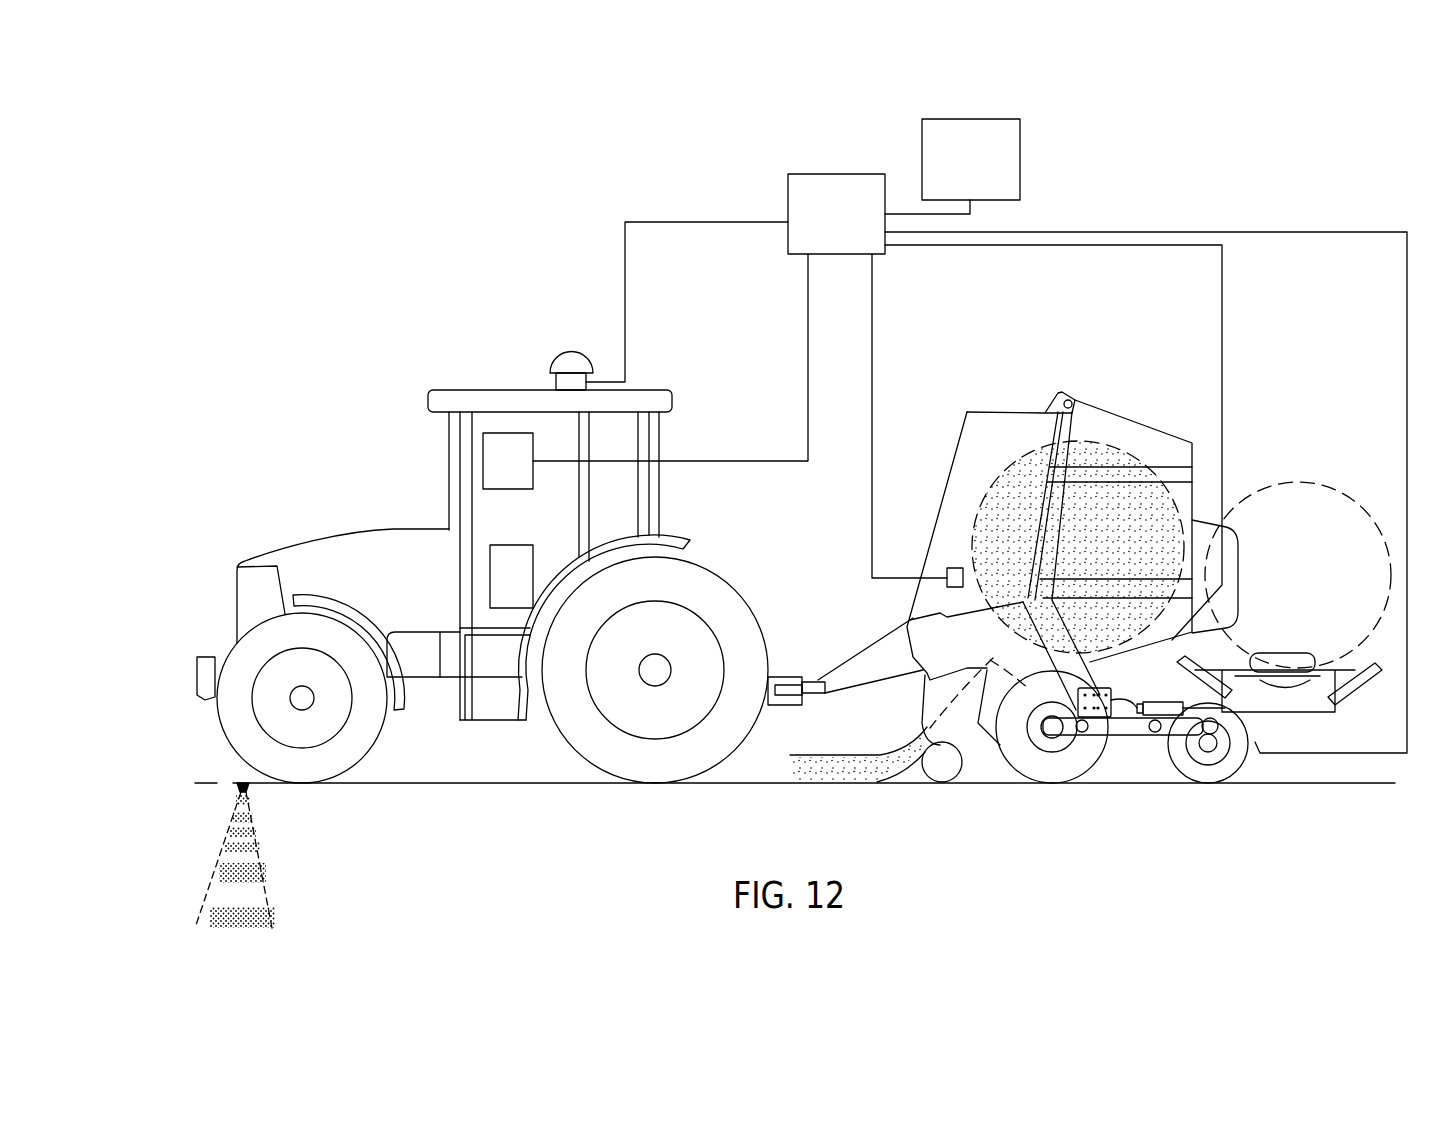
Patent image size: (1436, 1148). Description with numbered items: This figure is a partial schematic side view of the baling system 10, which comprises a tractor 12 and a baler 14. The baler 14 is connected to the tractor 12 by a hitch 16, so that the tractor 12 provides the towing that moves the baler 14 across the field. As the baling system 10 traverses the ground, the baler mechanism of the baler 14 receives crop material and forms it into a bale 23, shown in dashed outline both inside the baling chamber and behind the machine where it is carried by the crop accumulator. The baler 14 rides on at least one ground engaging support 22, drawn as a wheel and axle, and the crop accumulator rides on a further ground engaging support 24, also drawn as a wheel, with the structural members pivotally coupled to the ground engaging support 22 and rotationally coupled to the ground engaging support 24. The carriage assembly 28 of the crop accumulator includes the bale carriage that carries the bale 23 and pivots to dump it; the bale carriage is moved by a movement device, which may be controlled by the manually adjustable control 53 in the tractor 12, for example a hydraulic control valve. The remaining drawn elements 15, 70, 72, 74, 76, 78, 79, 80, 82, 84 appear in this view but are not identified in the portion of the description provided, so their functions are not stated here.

The baling system 10 is at (1203, 162).
The tractor 12 is at (466, 338).
The baler 14 is at (981, 349).
The operator cab 15 is at (455, 432).
The hitch 16 is at (790, 688).
The ground engaging support 22 is at (1068, 770).
The bale 23 is at (1115, 448).
The ground engaging support 24 is at (1208, 765).
The carriage assembly 28 is at (1367, 748).
The manually adjustable control 53 is at (500, 585).
The control system 70 is at (648, 158).
The communication link 72 is at (574, 238).
The beacon light 74 is at (567, 358).
The controller 76 is at (856, 153).
The display device 78 is at (500, 477).
The display screen 79 is at (500, 457).
The electronic control unit 80 is at (788, 200).
The spray 82 is at (262, 860).
The lookup table 84 is at (1022, 140).